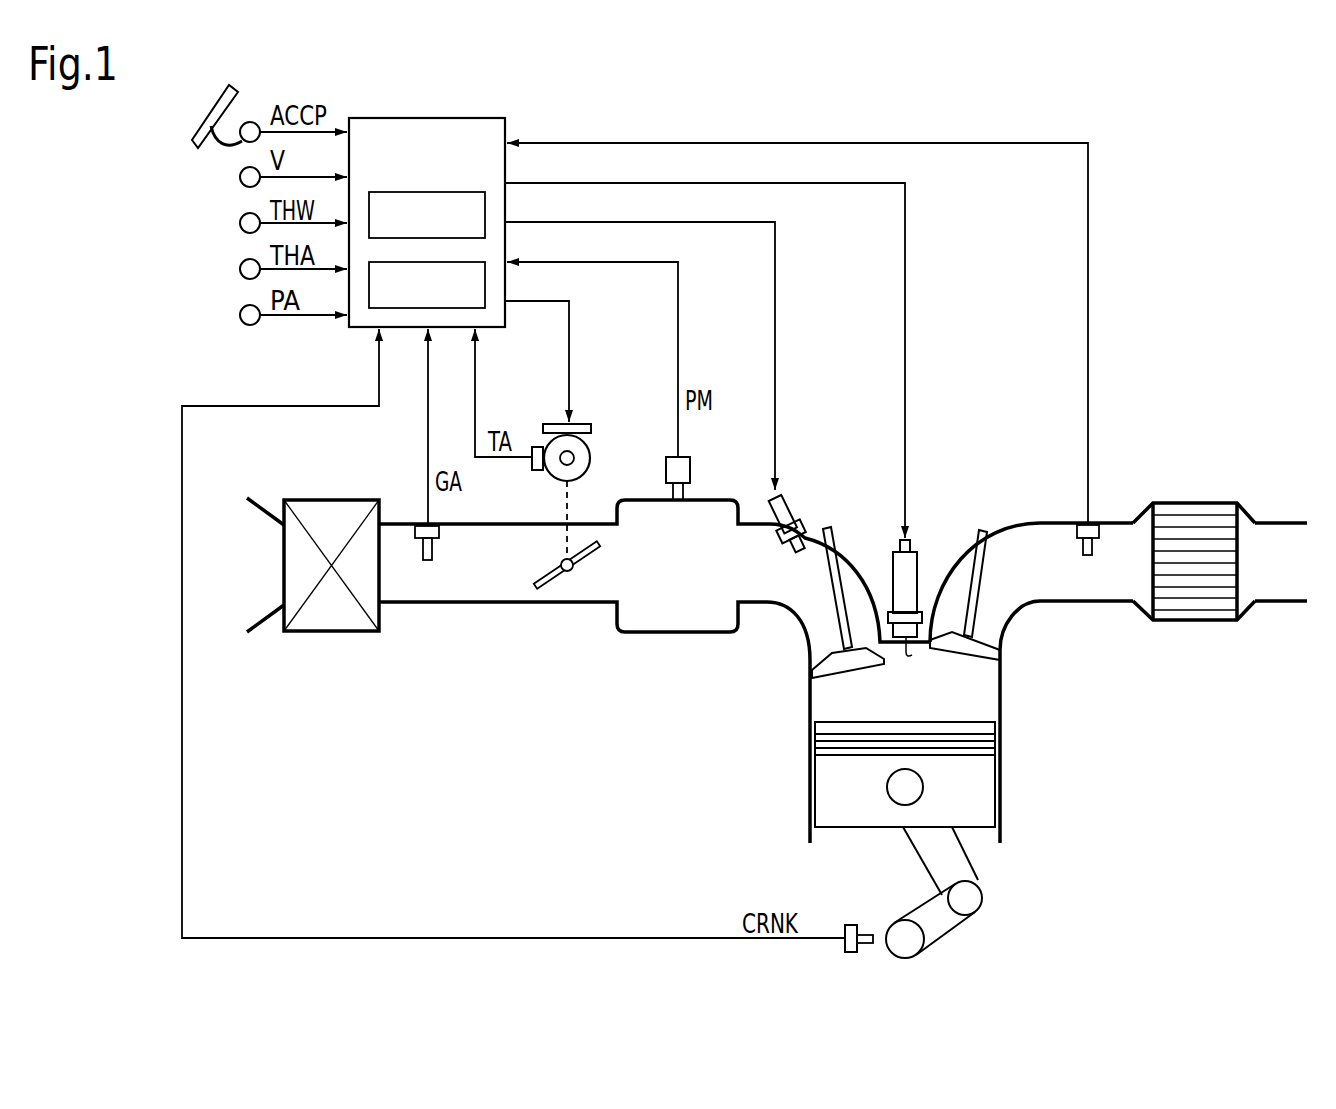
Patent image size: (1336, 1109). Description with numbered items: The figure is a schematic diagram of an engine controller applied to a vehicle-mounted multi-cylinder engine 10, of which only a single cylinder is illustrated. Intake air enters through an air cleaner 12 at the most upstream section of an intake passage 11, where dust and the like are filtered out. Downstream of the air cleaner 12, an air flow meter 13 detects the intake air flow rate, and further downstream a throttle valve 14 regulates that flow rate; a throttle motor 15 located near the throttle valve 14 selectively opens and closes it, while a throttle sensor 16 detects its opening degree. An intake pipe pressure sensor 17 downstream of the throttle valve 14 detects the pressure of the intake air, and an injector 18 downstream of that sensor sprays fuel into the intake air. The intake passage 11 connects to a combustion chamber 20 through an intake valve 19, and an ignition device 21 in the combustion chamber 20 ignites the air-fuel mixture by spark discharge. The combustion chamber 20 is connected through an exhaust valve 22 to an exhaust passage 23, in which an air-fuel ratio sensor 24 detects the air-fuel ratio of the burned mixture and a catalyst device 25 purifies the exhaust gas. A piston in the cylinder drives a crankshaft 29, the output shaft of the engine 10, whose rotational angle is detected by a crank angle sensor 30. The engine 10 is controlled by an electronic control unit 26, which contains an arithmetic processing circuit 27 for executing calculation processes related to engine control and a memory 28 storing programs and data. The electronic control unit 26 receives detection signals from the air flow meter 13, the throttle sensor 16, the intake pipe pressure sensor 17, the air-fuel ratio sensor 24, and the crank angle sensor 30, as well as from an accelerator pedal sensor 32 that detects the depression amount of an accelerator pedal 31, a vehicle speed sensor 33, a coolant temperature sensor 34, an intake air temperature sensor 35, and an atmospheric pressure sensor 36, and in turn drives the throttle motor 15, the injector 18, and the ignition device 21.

The engine 10 is at (411, 702).
The intake passage 11 is at (488, 604).
The air cleaner 12 is at (331, 632).
The air flow meter 13 is at (432, 552).
The throttle valve 14 is at (557, 582).
The throttle motor 15 is at (591, 456).
The throttle sensor 16 is at (538, 447).
The intake pipe pressure sensor 17 is at (690, 470).
The injector 18 is at (795, 505).
The intake valve 19 is at (845, 586).
The combustion chamber 20 is at (835, 697).
The ignition device 21 is at (918, 575).
The exhaust valve 22 is at (986, 579).
The exhaust passage 23 is at (1092, 603).
The air-fuel ratio sensor 24 is at (1092, 547).
The catalyst device 25 is at (1215, 620).
The electronic control unit 26 is at (392, 117).
The arithmetic processing circuit 27 is at (444, 192).
The memory 28 is at (447, 308).
The crankshaft 29 is at (900, 926).
The crank angle sensor 30 is at (850, 925).
The accelerator pedal 31 is at (213, 108).
The accelerator pedal sensor 32 is at (252, 121).
The vehicle speed sensor 33 is at (240, 177).
The coolant temperature sensor 34 is at (240, 223).
The intake air temperature sensor 35 is at (240, 269).
The atmospheric pressure sensor 36 is at (240, 315).